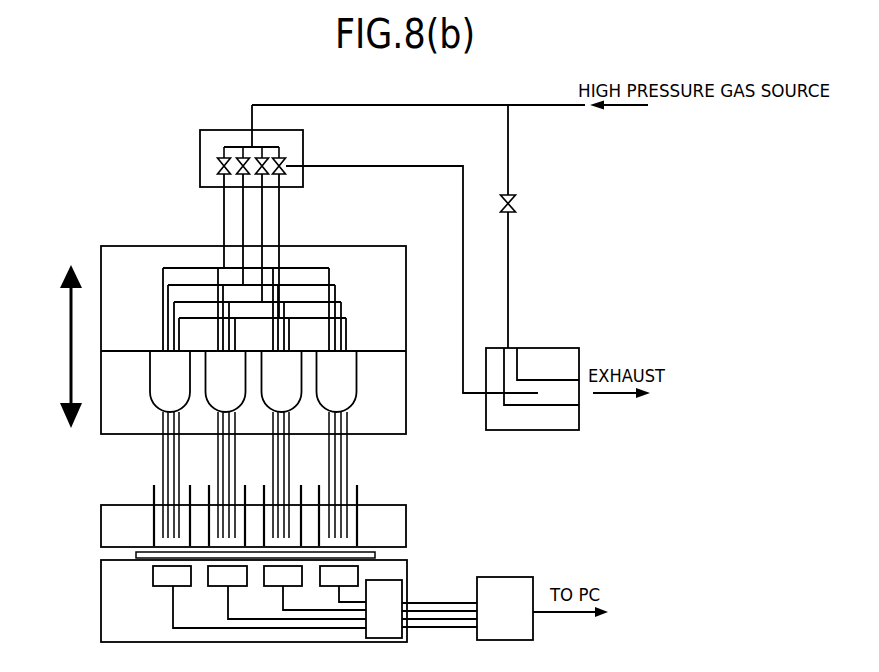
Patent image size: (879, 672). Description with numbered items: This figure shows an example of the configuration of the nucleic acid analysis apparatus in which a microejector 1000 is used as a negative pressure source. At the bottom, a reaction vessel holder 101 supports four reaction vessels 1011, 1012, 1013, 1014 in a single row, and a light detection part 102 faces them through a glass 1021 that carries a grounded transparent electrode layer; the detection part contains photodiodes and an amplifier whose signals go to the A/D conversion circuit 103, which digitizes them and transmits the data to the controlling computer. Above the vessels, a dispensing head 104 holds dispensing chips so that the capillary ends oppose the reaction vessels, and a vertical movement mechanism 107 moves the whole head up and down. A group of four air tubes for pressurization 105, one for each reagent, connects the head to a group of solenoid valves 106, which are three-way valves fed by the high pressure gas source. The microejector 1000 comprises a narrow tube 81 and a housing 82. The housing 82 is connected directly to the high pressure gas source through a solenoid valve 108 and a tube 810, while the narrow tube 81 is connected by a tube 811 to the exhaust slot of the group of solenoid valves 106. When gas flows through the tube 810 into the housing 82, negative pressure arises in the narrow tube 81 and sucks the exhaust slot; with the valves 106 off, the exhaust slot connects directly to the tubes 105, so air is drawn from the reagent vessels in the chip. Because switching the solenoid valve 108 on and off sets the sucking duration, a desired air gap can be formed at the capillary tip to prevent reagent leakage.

The reaction vessel holder 101 is at (227, 526).
The light detection part 102 is at (268, 601).
The A/D conversion circuit 103 is at (505, 595).
The dispensing head 104 is at (270, 340).
The air tubes for pressurization 105 is at (231, 246).
The group of solenoid valves 106 is at (232, 158).
The vertical movement mechanism 107 is at (51, 346).
The solenoid valve 108 is at (529, 205).
The tube 810 is at (525, 280).
The tube 811 is at (412, 289).
The narrow tube 81 is at (520, 396).
The housing 82 is at (557, 360).
The microejector 1000 is at (537, 406).
The reaction vessel 1011 is at (144, 479).
The reaction vessel 1012 is at (210, 479).
The reaction vessel 1013 is at (295, 479).
The reaction vessel 1014 is at (366, 479).
The glass 1021 is at (136, 556).